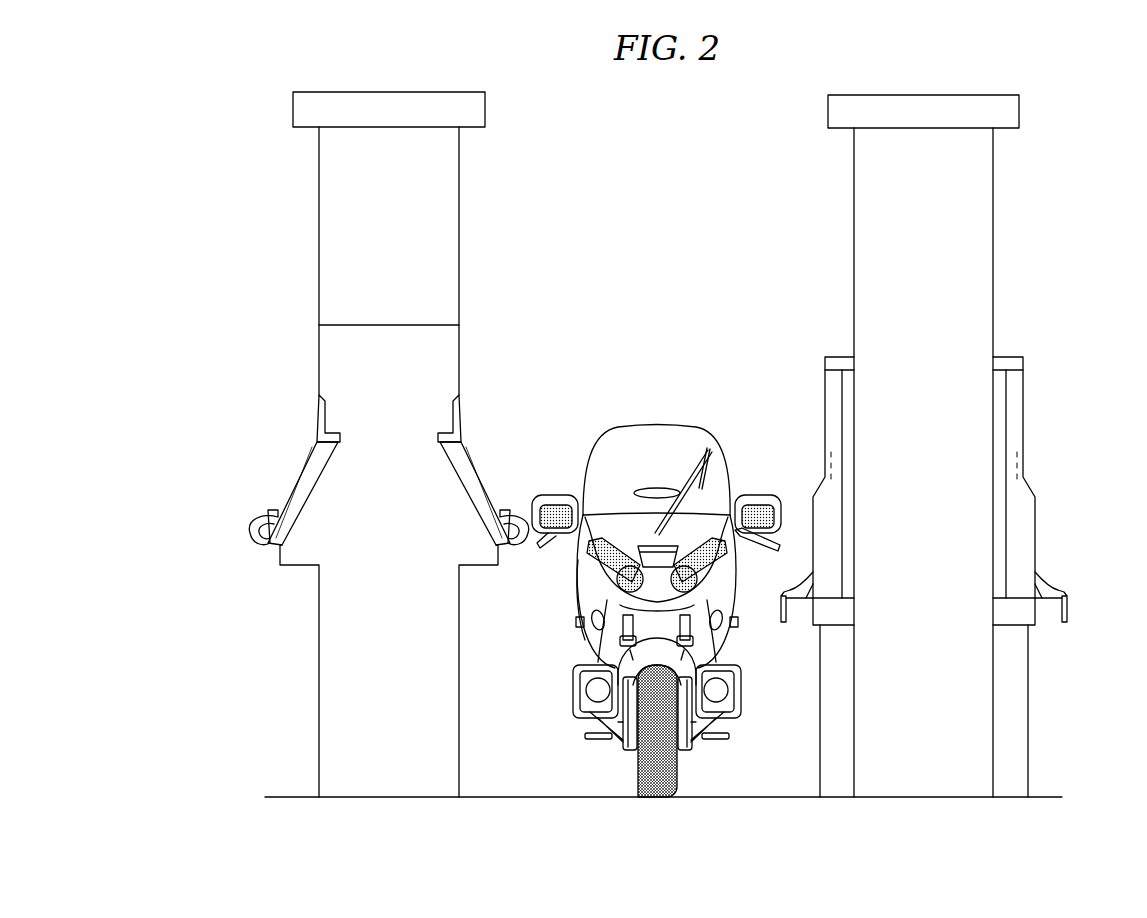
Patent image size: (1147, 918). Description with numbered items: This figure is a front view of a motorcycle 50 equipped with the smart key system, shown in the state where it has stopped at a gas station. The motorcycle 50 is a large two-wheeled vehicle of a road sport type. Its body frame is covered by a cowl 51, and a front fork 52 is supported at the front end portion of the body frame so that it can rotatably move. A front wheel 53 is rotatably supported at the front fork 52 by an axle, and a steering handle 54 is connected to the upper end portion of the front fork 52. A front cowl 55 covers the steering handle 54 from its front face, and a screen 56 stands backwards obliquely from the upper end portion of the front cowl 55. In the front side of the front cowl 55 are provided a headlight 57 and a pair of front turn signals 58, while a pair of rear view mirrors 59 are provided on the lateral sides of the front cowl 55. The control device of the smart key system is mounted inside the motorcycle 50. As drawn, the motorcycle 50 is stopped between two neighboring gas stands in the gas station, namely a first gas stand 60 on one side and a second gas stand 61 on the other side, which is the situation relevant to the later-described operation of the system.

The motorcycle 50 is at (722, 410).
The cowl 51 is at (576, 651).
The front fork 52 is at (690, 642).
The front wheel 53 is at (677, 775).
The steering handle 54 is at (780, 547).
The front cowl 55 is at (612, 511).
The screen 56 is at (663, 441).
The headlight 57 is at (627, 583).
The front turn signal 58 is at (591, 553).
The rear view mirror 59 is at (550, 495).
The first gas stand 60 is at (293, 112).
The second gas stand 61 is at (1019, 110).